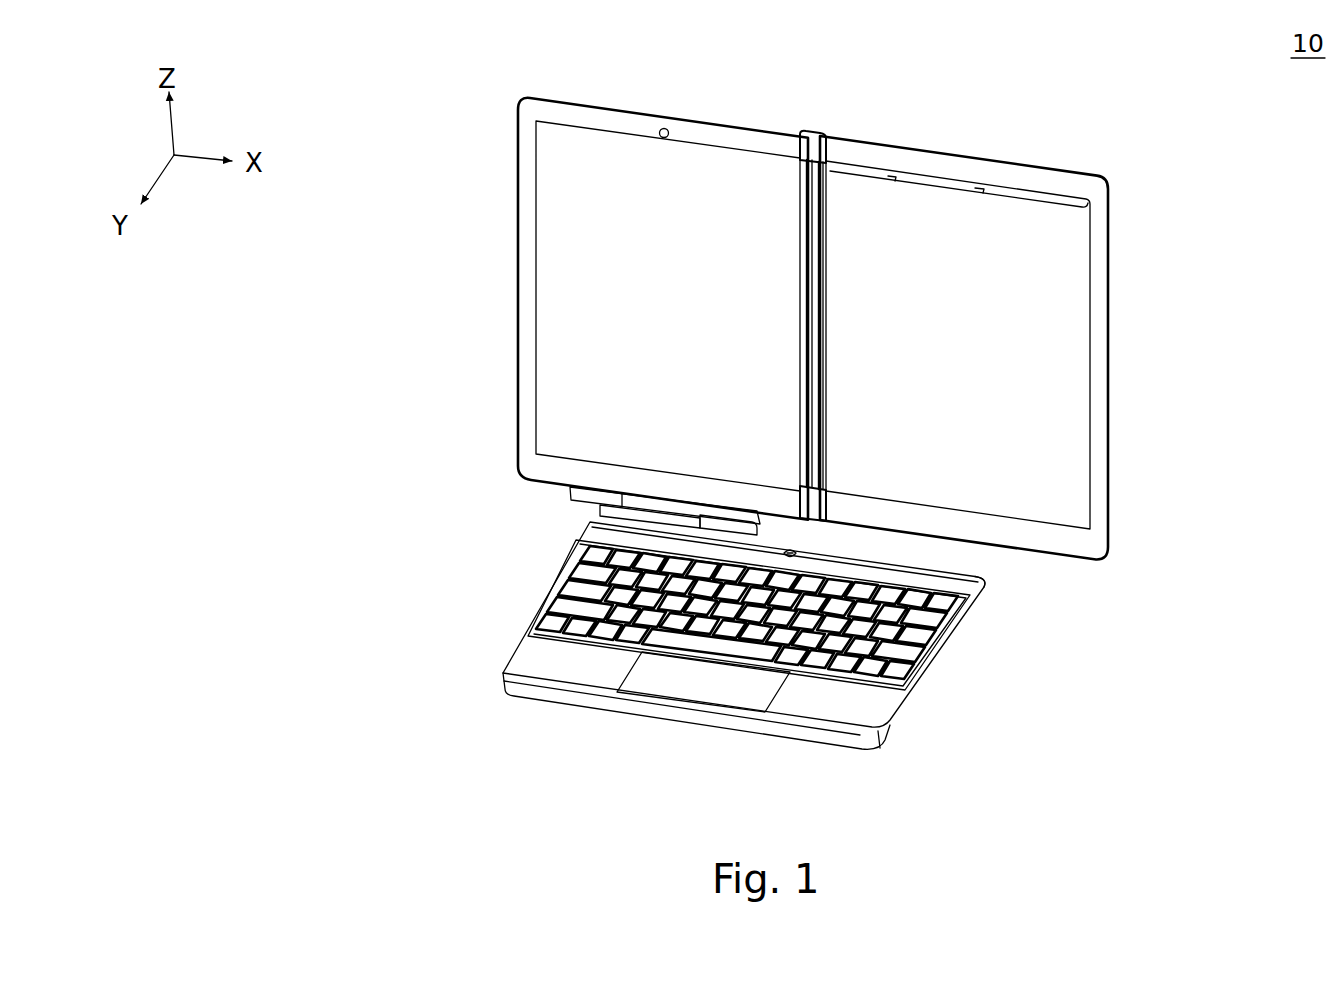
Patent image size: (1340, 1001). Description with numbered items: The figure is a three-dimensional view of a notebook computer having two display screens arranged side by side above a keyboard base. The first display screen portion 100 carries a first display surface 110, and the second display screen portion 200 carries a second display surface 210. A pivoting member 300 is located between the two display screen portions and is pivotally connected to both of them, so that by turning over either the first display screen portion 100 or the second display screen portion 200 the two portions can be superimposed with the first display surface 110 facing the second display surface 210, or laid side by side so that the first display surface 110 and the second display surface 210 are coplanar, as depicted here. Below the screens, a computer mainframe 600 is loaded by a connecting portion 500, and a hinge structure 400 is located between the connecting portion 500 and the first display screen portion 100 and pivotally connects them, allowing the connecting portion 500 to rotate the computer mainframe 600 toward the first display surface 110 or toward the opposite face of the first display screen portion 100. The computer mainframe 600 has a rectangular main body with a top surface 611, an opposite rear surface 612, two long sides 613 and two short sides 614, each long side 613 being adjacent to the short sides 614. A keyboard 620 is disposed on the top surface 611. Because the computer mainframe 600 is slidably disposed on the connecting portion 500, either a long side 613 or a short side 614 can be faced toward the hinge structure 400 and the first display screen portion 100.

The first display screen portion 100 is at (620, 284).
The first display surface 110 is at (585, 148).
The second display screen portion 200 is at (1006, 334).
The second display surface 210 is at (930, 195).
The pivoting member 300 is at (812, 133).
The hinge structure 400 is at (624, 498).
The connecting portion 500 is at (710, 592).
The computer mainframe 600 is at (751, 649).
The top surface 611 is at (540, 673).
The rear surface 612 is at (566, 712).
The long side 613 is at (985, 578).
The short side 614 is at (545, 610).
The keyboard 620 is at (935, 628).